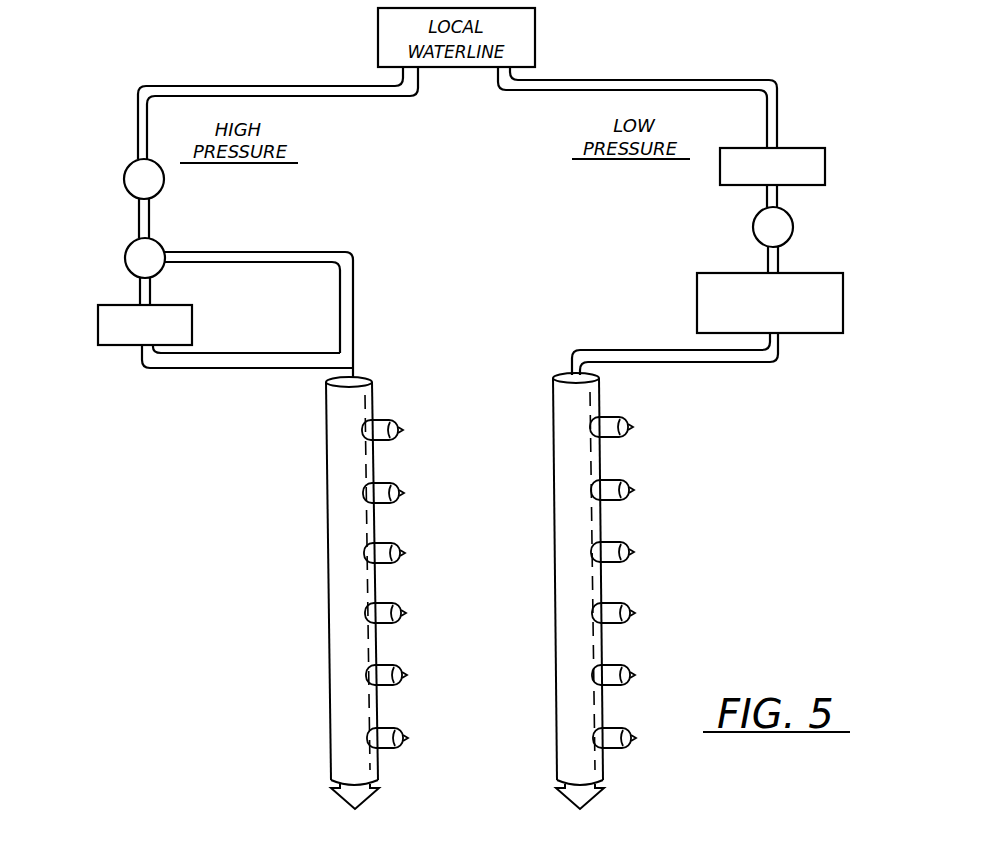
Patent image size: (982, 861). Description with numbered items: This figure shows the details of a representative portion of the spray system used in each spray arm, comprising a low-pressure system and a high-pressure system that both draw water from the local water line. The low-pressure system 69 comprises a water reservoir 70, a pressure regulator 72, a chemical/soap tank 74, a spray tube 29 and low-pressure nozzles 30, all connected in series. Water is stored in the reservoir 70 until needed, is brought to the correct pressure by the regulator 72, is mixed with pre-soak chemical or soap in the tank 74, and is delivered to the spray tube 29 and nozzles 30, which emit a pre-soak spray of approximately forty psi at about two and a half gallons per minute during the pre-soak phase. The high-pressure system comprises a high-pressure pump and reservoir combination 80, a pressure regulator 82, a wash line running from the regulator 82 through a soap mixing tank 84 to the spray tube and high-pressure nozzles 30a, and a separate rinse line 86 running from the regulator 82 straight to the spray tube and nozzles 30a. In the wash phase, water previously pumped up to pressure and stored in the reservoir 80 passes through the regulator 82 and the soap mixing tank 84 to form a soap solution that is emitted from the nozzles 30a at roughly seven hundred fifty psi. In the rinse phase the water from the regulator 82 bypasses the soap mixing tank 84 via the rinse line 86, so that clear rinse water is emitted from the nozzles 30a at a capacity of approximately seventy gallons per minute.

The spray tube 29 is at (346, 708).
The low-pressure nozzle 30 is at (628, 602).
The high-pressure nozzle 30a is at (361, 612).
The low-pressure system 69 is at (660, 68).
The water reservoir 70 is at (806, 147).
The pressure regulator 72 is at (797, 230).
The chemical/soap tank 74 is at (816, 337).
The high-pressure pump and reservoir combination 80 is at (122, 166).
The pressure regulator 82 is at (123, 259).
The soap mixing tank 84 is at (110, 350).
The rinse line 86 is at (280, 244).